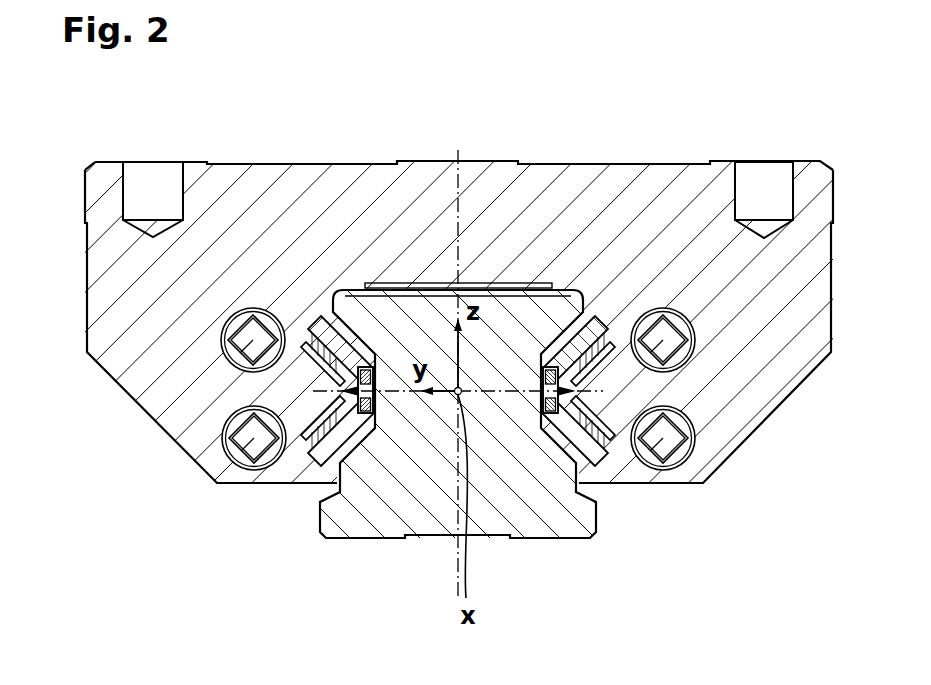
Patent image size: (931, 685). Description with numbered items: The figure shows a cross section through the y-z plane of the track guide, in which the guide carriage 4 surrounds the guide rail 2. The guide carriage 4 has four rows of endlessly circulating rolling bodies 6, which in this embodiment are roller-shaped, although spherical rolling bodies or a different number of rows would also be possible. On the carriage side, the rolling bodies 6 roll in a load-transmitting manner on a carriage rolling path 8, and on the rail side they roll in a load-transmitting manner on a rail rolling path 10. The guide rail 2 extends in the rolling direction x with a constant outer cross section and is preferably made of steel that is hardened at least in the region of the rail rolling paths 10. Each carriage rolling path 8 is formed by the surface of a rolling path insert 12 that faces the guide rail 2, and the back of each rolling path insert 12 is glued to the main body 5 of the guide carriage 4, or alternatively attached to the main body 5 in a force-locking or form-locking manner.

The guide rail 2 is at (597, 522).
The guide carriage 4 is at (538, 156).
The main body 5 is at (621, 186).
The rolling bodies 6 is at (352, 340).
The carriage rolling path 8 is at (335, 445).
The rail rolling path 10 is at (318, 386).
The rolling path insert 12 is at (300, 330).